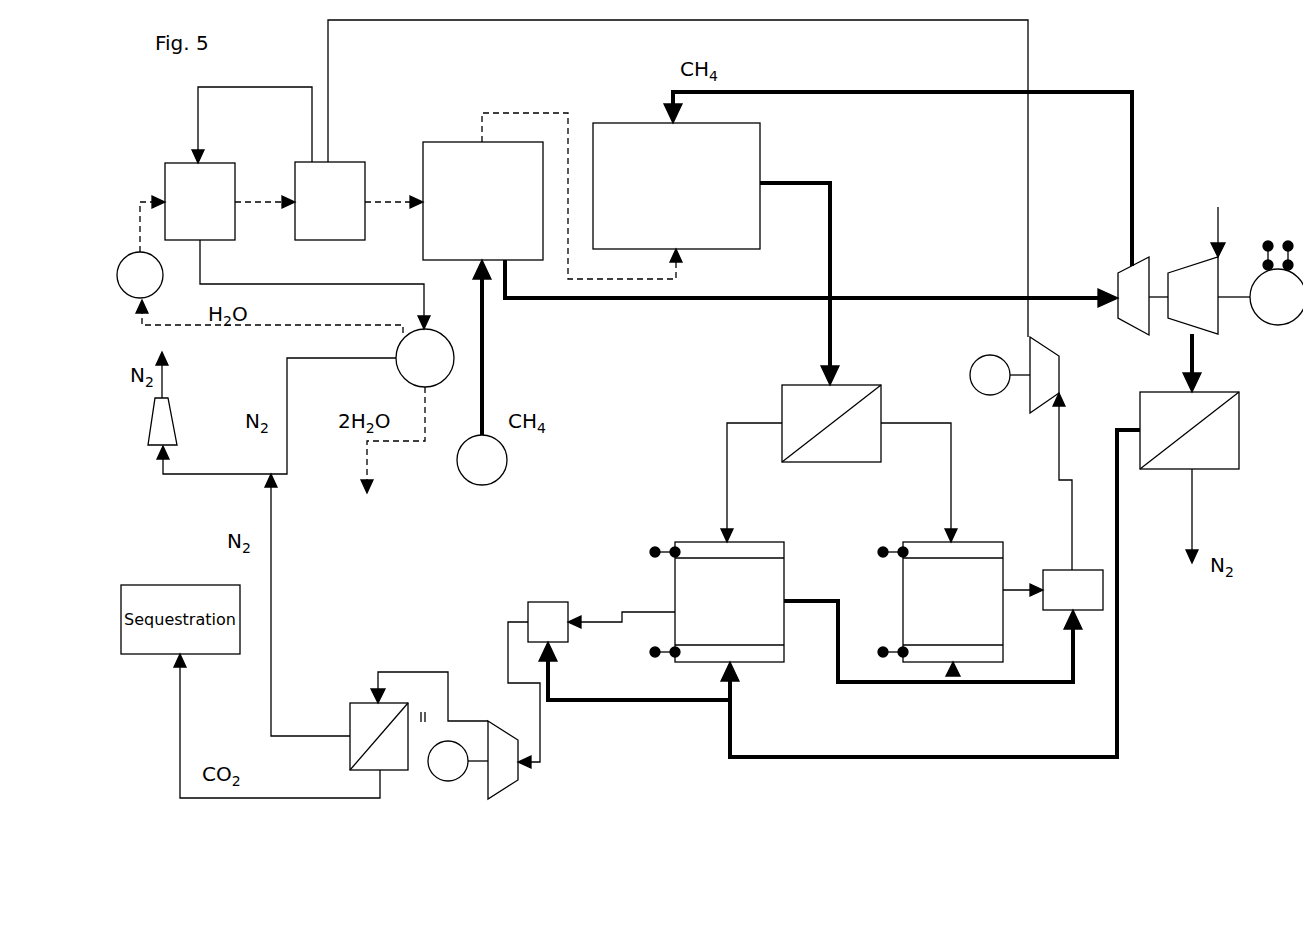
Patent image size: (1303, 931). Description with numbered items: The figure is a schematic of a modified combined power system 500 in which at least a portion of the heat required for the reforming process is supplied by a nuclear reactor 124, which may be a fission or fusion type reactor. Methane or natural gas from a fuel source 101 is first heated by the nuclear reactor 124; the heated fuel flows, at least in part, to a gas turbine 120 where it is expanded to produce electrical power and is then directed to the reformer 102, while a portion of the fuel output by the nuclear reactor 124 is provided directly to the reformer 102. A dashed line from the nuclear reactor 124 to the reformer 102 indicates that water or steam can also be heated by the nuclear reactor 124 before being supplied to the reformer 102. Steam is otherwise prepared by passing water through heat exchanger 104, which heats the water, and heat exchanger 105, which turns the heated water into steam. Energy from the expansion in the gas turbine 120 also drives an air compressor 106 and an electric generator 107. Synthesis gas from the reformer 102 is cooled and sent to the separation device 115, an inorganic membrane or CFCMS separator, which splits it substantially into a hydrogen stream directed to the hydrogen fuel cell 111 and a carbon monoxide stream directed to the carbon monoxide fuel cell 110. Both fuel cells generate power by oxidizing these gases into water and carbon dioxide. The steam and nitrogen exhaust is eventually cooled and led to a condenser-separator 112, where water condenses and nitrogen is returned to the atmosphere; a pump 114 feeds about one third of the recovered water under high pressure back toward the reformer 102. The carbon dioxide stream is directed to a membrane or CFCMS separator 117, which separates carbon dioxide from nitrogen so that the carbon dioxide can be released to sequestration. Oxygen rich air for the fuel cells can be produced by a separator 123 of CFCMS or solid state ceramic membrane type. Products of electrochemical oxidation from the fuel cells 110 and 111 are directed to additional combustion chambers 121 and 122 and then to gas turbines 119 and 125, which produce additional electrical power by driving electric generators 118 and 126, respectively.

The power generation system 500 is at (652, 783).
The fuel source 101 is at (482, 460).
The reformer 102 is at (676, 186).
The heat exchanger 104 is at (200, 201).
The heat exchanger 105 is at (330, 201).
The air compressor 106 is at (1193, 295).
The electric generator 107 is at (1276, 283).
The carbon monoxide fuel cell 110 is at (717, 602).
The hydrogen fuel cell 111 is at (940, 602).
The condenser-separator 112 is at (425, 358).
The pump 114 is at (140, 275).
The separation device 115 is at (831, 423).
The separator 117 is at (379, 736).
The electric generator 118 is at (448, 761).
The gas turbine 119 is at (502, 760).
The gas turbine 120 is at (1133, 296).
The combustion chamber 121 is at (548, 622).
The combustion chamber 122 is at (1073, 590).
The separator 123 is at (1189, 430).
The nuclear reactor 124 is at (483, 201).
The gas turbine 125 is at (1044, 375).
The electric generator 126 is at (990, 375).